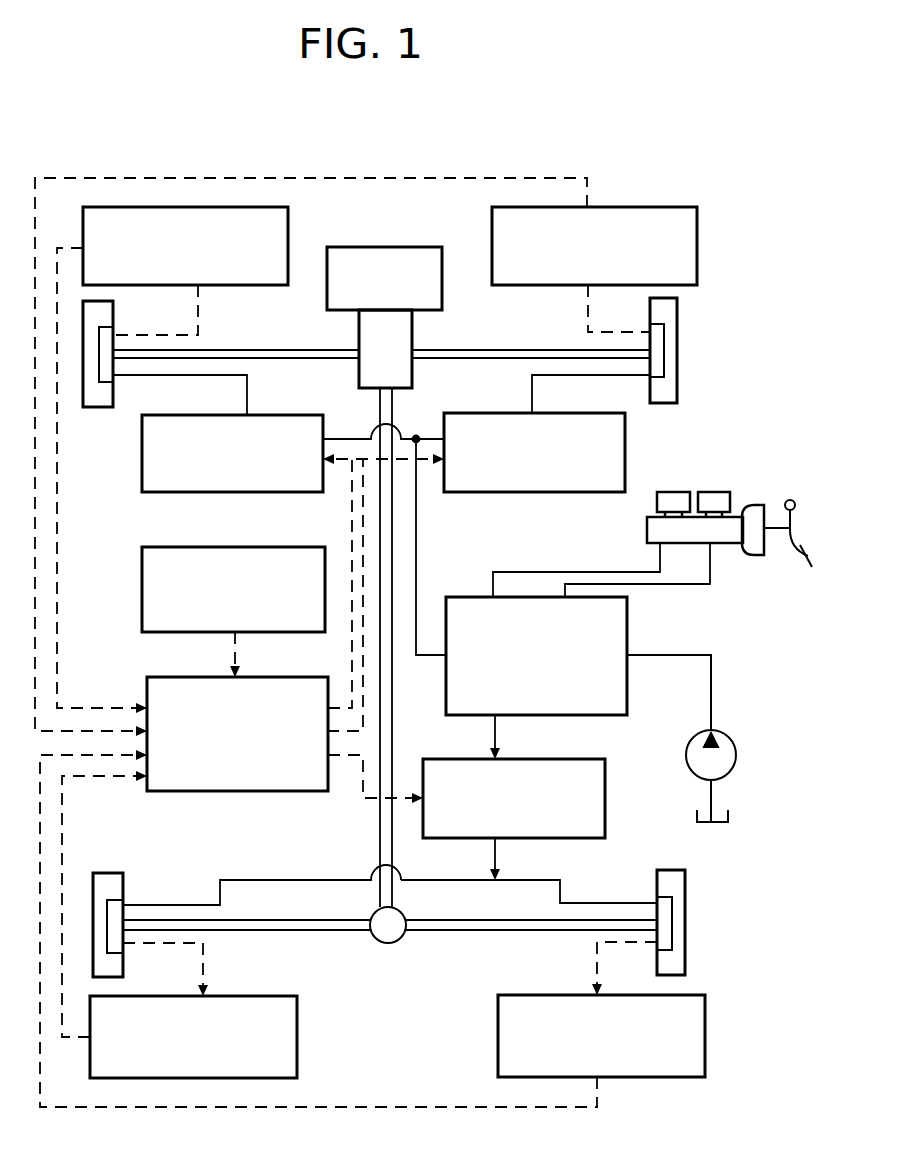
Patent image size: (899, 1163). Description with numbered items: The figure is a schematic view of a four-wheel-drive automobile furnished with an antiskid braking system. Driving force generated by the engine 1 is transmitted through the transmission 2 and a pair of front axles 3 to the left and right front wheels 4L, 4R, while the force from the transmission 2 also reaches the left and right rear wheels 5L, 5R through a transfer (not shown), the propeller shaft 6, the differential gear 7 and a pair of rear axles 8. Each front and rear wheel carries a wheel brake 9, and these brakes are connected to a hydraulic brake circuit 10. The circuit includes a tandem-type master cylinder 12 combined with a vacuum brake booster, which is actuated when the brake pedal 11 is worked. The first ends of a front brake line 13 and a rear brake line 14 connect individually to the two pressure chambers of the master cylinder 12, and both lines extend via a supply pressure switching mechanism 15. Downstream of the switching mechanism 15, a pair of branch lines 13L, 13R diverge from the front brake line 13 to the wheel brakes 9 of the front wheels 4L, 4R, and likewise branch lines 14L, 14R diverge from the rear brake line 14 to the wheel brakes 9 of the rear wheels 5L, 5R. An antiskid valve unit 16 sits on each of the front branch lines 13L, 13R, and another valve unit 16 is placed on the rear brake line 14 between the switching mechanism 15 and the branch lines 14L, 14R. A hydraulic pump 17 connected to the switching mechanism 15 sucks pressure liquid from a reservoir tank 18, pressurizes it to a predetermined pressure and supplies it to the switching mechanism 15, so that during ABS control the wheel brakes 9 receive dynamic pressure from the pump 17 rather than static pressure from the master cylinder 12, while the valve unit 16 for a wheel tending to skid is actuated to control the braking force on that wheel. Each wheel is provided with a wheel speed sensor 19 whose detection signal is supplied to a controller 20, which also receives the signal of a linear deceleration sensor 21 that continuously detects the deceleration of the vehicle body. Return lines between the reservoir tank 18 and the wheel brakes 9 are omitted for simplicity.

The engine 1 is at (442, 262).
The transmission 2 is at (412, 375).
The front axles 3 is at (247, 350).
The left front wheel 4L is at (95, 407).
The right front wheel 4R is at (668, 403).
The left rear wheel 5L is at (100, 873).
The right rear wheel 5R is at (668, 870).
The propeller shaft 6 is at (392, 718).
The differential gear 7 is at (400, 938).
The rear axles 8 is at (275, 932).
The wheel brake 9 is at (106, 360).
The hydraulic brake circuit 10 is at (735, 372).
The brake pedal 11 is at (822, 548).
The master cylinder 12 is at (735, 543).
The front brake line 13 is at (416, 530).
The left front branch line 13L is at (247, 395).
The right front branch line 13R is at (530, 393).
The rear brake line 14 is at (672, 584).
The left rear branch line 14L is at (270, 880).
The right rear branch line 14R is at (560, 893).
The supply pressure switching mechanism 15 is at (627, 688).
The antiskid valve unit 16 is at (142, 492).
The hydraulic pump 17 is at (736, 752).
The reservoir tank 18 is at (730, 815).
The wheel speed sensor 19 is at (288, 227).
The controller 20 is at (268, 791).
The linear deceleration sensor 21 is at (142, 596).